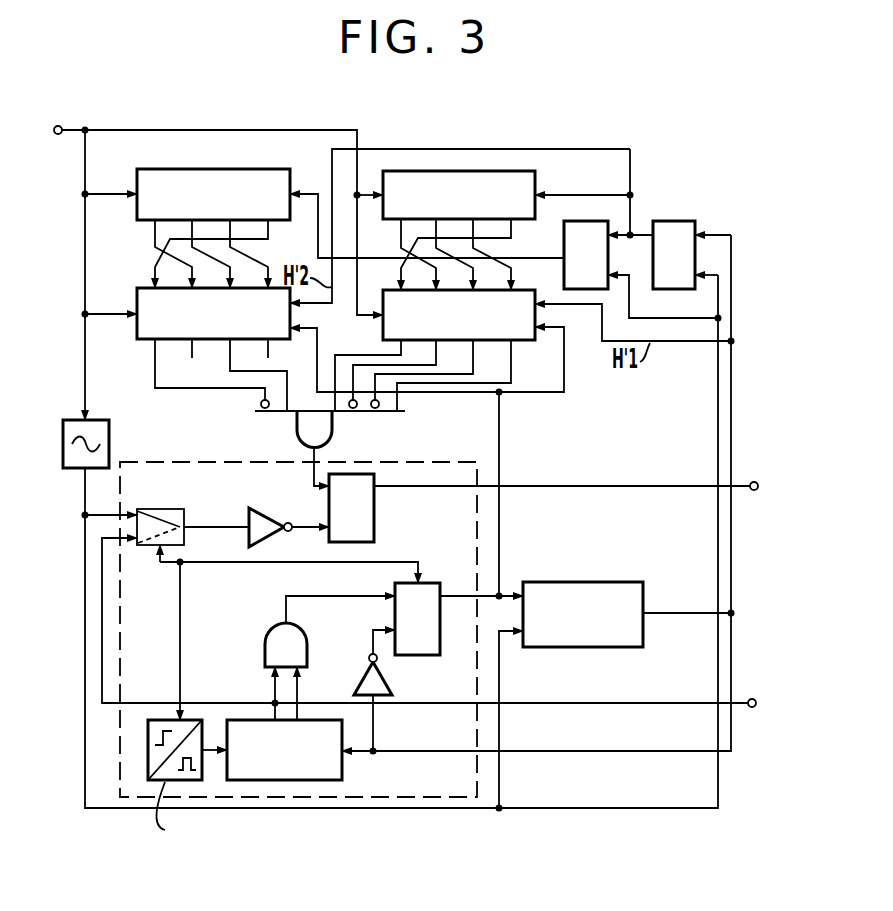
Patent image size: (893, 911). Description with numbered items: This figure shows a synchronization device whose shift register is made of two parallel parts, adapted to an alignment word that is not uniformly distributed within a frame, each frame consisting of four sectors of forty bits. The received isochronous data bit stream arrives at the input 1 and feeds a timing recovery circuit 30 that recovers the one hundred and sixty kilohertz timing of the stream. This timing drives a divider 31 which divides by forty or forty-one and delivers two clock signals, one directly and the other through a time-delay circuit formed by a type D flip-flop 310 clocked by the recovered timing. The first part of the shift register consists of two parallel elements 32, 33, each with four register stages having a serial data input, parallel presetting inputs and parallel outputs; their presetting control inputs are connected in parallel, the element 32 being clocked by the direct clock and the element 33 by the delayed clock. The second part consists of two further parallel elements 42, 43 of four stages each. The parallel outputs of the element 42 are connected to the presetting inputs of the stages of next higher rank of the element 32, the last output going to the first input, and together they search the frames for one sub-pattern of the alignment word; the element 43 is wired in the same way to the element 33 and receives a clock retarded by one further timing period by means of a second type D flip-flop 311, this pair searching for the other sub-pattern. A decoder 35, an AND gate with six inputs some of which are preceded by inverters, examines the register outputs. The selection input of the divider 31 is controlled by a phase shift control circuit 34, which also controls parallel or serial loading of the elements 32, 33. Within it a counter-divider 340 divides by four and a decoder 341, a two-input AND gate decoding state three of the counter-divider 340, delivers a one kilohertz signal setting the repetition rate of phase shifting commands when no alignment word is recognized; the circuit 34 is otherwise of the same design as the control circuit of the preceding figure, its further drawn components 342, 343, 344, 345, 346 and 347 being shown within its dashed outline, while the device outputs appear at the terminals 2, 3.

The input 1 is at (58, 126).
The output terminal 2 is at (754, 481).
The output terminal 3 is at (752, 698).
The timing recovery circuit 30 is at (105, 449).
The divider 31 is at (610, 590).
The first element of the first part of the shift register 32 is at (398, 328).
The second element of the first part of the shift register 33 is at (165, 325).
The phase shift control circuit 34 is at (478, 776).
The decoder 35 is at (318, 433).
The first element of the second part of the shift register 42 is at (398, 206).
The second element of the second part of the shift register 43 is at (241, 185).
The type D flip-flop 310 is at (672, 228).
The type D flip-flop 311 is at (573, 237).
The counter-divider 340 is at (344, 770).
The decoder 341 is at (270, 642).
The inverter 342 is at (393, 683).
The flip-flop 343 is at (410, 610).
The switch 344 is at (155, 508).
The flip-flop 345 is at (376, 526).
The inverter 346 is at (264, 510).
The detector 347 is at (160, 719).